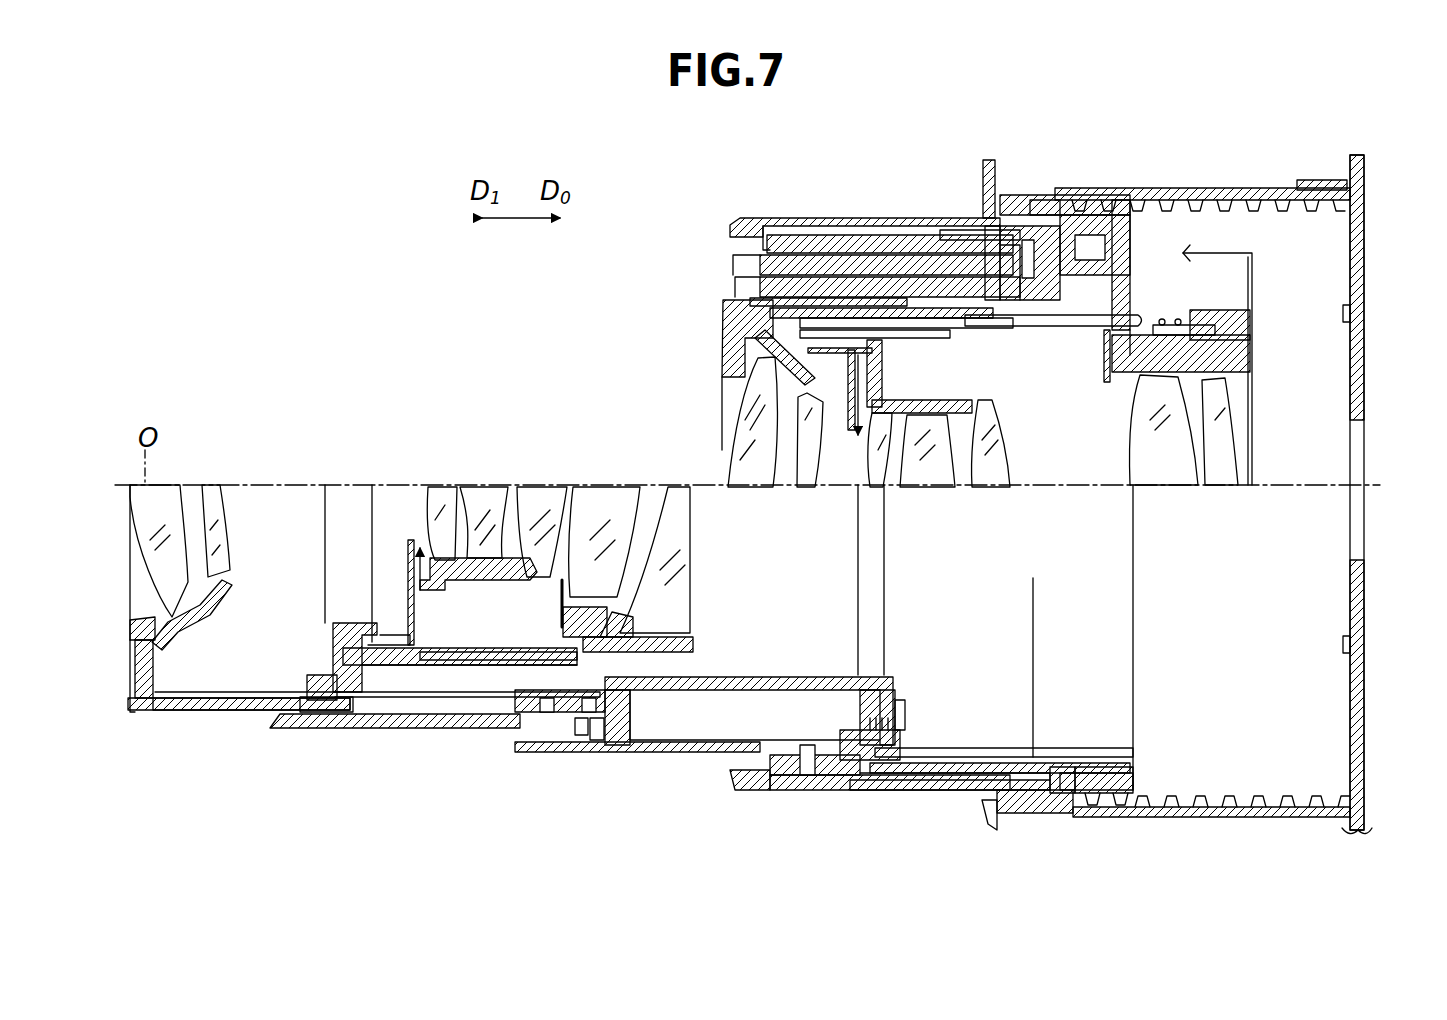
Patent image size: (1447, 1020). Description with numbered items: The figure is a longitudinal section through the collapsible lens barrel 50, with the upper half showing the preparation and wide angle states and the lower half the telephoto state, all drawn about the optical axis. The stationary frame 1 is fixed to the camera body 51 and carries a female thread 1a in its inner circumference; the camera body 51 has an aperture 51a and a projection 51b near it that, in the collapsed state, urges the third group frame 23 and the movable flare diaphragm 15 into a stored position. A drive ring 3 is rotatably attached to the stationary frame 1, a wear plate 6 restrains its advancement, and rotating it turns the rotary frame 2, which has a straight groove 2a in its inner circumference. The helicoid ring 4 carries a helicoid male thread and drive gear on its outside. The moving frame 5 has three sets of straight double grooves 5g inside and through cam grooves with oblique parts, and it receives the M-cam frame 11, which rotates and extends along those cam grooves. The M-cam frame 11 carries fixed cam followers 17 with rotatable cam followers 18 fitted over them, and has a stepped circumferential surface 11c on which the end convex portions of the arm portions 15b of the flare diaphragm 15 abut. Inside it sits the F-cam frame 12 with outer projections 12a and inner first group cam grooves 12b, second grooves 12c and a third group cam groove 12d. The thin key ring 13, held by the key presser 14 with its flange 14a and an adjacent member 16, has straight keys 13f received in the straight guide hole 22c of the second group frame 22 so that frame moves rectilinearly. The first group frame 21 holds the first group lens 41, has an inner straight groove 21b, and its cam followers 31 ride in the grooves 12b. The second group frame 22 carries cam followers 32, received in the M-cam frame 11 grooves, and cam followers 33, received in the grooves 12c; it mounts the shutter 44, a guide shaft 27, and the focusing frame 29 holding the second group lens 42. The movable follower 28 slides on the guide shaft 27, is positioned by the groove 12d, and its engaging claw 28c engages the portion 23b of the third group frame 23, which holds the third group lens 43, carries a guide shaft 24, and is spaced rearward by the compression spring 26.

The stationary frame 1 is at (1318, 187).
The female thread 1a is at (1232, 196).
The rotary frame 2 is at (828, 220).
The straight groove 2a is at (796, 236).
The drive ring 3 is at (1028, 195).
The helicoid ring 4 is at (1108, 200).
The moving frame 5 is at (752, 220).
The straight double grooves 5g is at (1095, 765).
The wear plate 6 is at (988, 162).
The M-cam frame 11 is at (738, 262).
The circumferential surface 11c is at (940, 752).
The F-cam frame 12 is at (740, 286).
The projections 12a is at (592, 752).
The first group cam grooves 12b is at (965, 306).
The second grooves 12c is at (1020, 292).
The third group cam groove 12d is at (905, 270).
The key ring 13 is at (1135, 300).
The straight keys 13f is at (790, 675).
The key presser 14 is at (855, 700).
The flange 14a is at (862, 762).
The movable flare diaphragm 15 is at (1255, 292).
The arm portions 15b is at (1200, 255).
The spring 16 is at (905, 705).
The cam followers 17 is at (1012, 242).
The cam followers 18 is at (933, 225).
The first group frame 21 is at (748, 302).
The straight groove 21b is at (225, 712).
The second group frame 22 is at (740, 352).
The straight guide hole 22c is at (628, 667).
The third group frame 23 is at (1240, 350).
The engaged portion 23b is at (1106, 362).
The guide shaft 24 is at (1213, 320).
The compression spring 26 is at (1172, 322).
The guide shaft 27 is at (1062, 302).
The movable follower 28 is at (1160, 300).
The engaging claw 28c is at (1130, 360).
The focusing frame 29 is at (940, 402).
The cam followers 31 is at (322, 687).
The cam followers 32 is at (1100, 192).
The cam followers 33 is at (326, 704).
The first group lens 41 is at (756, 478).
The second group lens 42 is at (976, 478).
The third group lens 43 is at (1210, 478).
The shutter 44 is at (882, 400).
The lens barrel 50 is at (1272, 108).
The camera body 51 is at (1366, 172).
The aperture 51a is at (1352, 450).
The projection 51b is at (1352, 314).